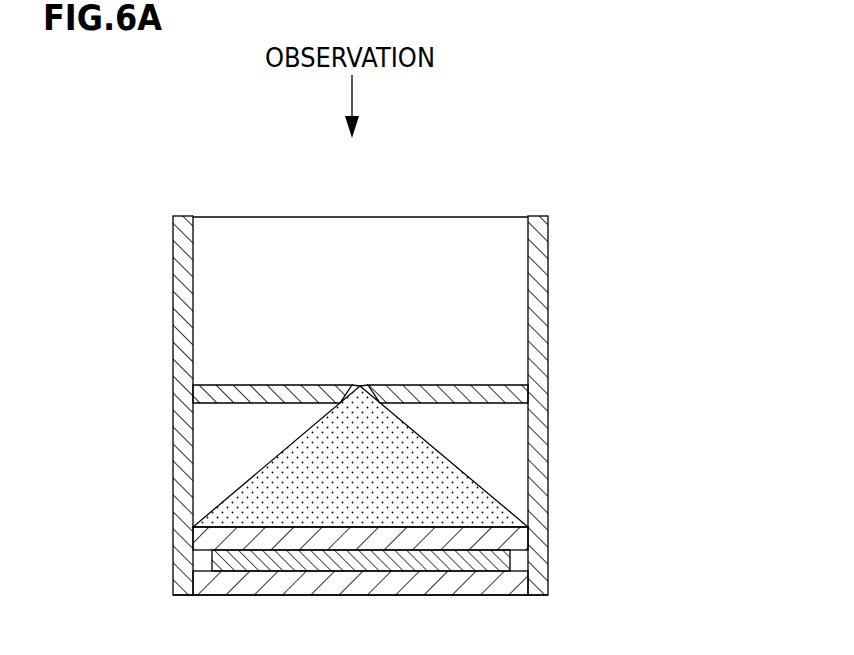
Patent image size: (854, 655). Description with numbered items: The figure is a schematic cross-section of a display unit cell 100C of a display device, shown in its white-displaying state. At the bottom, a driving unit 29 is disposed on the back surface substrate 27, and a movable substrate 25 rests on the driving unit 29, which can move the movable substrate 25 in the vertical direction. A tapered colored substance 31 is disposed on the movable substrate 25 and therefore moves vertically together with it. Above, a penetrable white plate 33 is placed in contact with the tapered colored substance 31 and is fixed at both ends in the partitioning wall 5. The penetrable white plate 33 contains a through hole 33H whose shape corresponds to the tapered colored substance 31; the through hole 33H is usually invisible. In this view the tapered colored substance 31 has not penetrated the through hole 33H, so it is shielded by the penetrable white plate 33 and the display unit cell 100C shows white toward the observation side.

The display unit cell 100C is at (667, 178).
The partitioning wall 5 is at (183, 410).
The penetrable white plate 33 is at (512, 387).
The through hole 33H is at (360, 386).
The tapered colored substance 31 is at (447, 468).
The movable substrate 25 is at (528, 530).
The driving unit 29 is at (393, 568).
The back surface substrate 27 is at (487, 587).